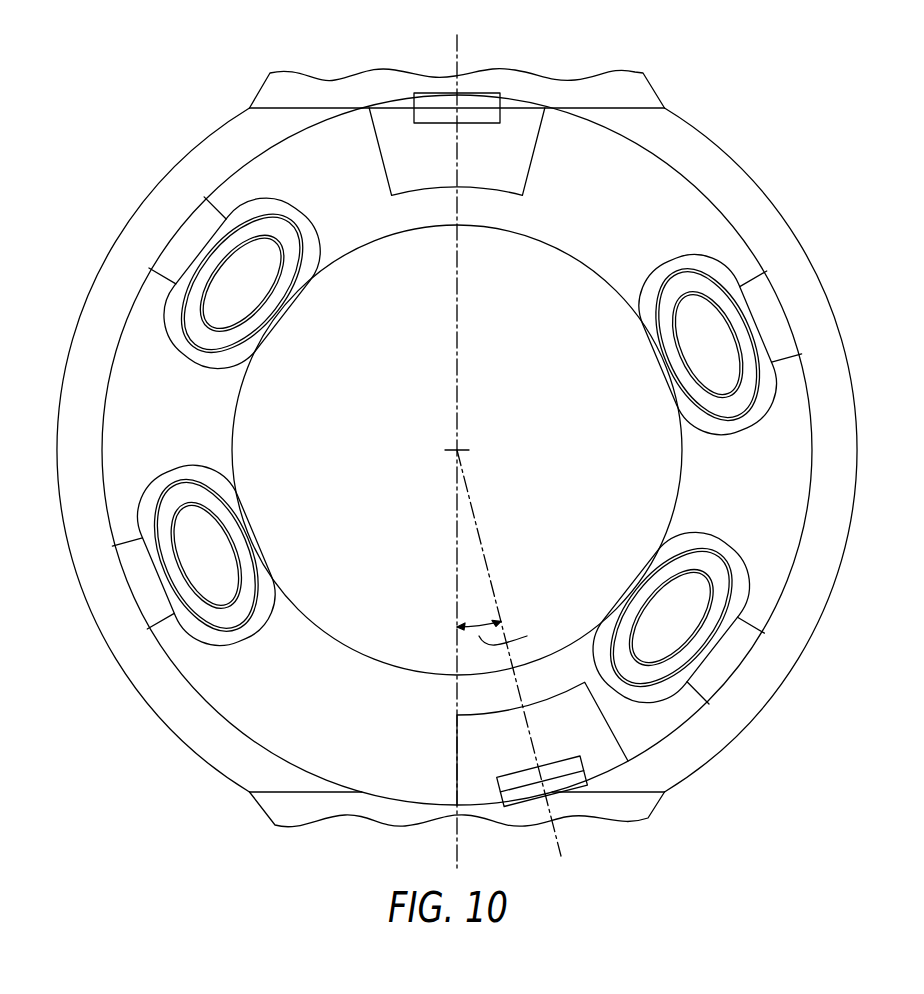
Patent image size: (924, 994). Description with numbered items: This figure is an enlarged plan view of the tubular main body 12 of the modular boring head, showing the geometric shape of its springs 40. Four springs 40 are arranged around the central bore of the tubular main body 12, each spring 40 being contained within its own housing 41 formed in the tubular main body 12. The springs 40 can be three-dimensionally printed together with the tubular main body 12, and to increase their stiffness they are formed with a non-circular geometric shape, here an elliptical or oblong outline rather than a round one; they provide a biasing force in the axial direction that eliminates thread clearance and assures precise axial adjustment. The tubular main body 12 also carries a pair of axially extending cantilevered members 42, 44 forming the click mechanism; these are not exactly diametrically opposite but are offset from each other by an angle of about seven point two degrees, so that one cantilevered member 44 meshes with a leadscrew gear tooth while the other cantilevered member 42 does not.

The tubular main body 12 is at (762, 118).
The spring 40 is at (215, 258).
The housing 41 is at (248, 210).
The cantilevered member 42 is at (466, 104).
The cantilevered member 44 is at (560, 773).